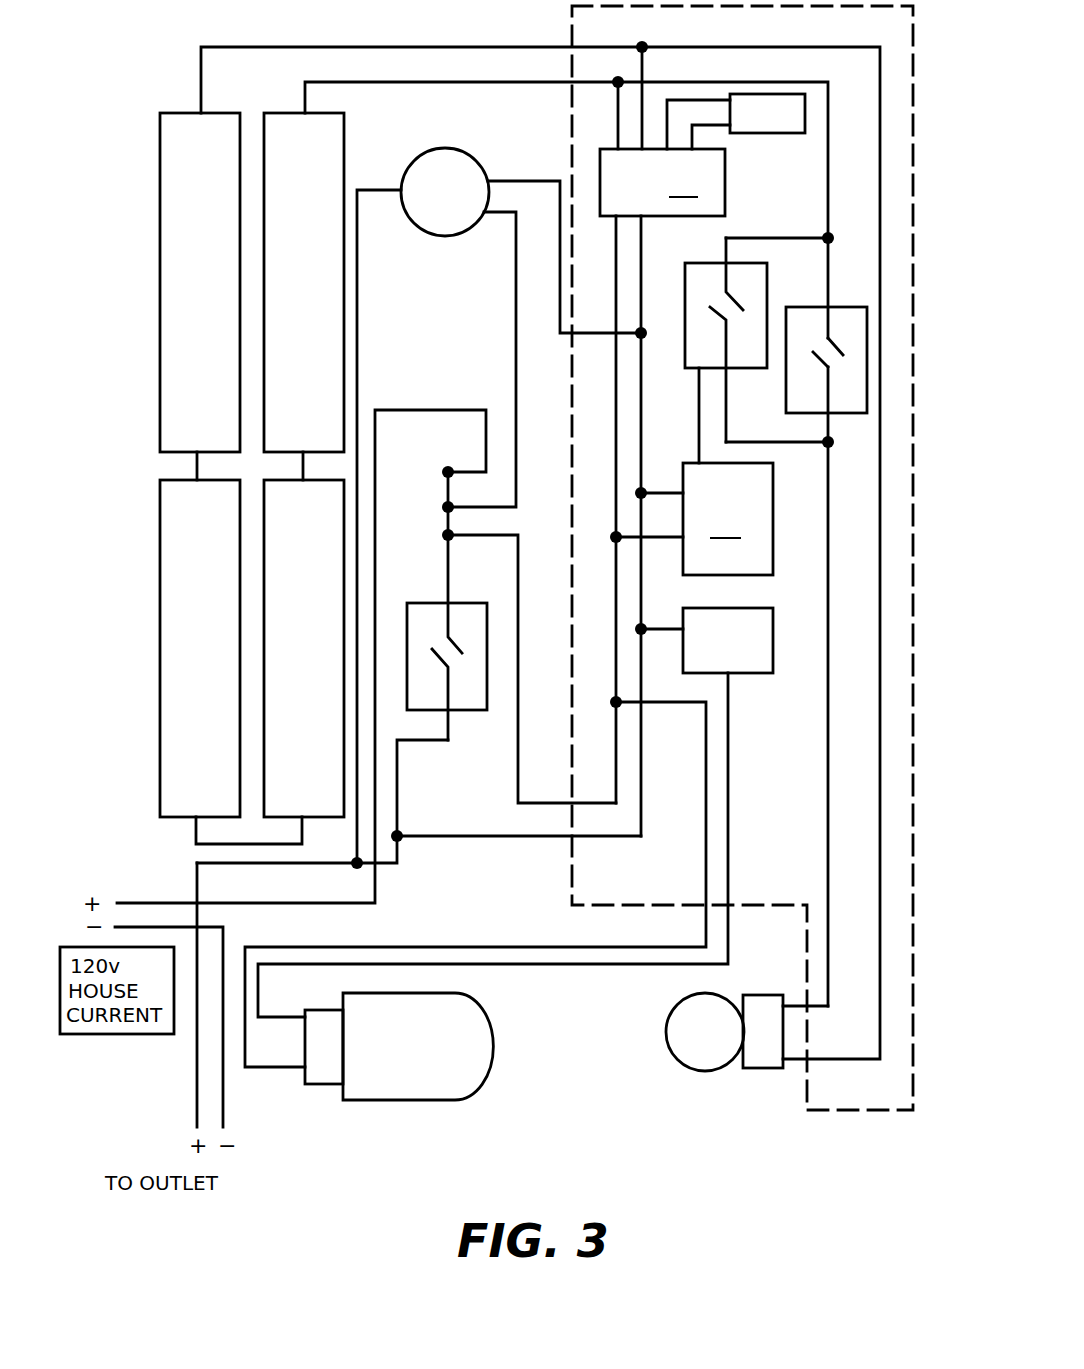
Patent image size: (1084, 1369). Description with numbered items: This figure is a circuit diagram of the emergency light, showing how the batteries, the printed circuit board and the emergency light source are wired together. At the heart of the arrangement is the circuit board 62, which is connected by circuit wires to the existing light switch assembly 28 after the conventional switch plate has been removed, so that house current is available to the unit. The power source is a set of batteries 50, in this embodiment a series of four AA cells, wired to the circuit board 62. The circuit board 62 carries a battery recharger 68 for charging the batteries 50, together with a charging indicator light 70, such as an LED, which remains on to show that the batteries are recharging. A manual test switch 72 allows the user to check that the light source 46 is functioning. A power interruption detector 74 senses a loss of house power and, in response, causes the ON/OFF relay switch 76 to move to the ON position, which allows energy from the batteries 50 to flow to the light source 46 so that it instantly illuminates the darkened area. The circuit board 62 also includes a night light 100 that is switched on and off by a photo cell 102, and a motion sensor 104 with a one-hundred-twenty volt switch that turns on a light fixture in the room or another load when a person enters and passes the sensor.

The light switch assembly 28 is at (458, 705).
The light source 46 is at (700, 1065).
The batteries 50 is at (168, 217).
The circuit board 62 is at (566, 17).
The battery recharger 68 is at (665, 158).
The charging indicator light 70 is at (742, 122).
The manual test switch 72 is at (813, 315).
The power interruption detector 74 is at (728, 519).
The ON/OFF relay switch 76 is at (710, 267).
The night light 100 is at (480, 1018).
The photo cell 102 is at (738, 663).
The motion sensor 104 is at (453, 228).